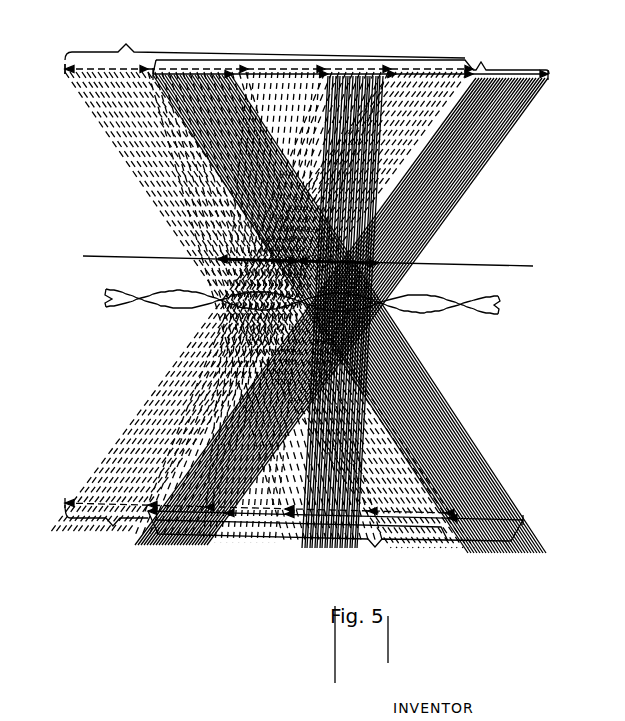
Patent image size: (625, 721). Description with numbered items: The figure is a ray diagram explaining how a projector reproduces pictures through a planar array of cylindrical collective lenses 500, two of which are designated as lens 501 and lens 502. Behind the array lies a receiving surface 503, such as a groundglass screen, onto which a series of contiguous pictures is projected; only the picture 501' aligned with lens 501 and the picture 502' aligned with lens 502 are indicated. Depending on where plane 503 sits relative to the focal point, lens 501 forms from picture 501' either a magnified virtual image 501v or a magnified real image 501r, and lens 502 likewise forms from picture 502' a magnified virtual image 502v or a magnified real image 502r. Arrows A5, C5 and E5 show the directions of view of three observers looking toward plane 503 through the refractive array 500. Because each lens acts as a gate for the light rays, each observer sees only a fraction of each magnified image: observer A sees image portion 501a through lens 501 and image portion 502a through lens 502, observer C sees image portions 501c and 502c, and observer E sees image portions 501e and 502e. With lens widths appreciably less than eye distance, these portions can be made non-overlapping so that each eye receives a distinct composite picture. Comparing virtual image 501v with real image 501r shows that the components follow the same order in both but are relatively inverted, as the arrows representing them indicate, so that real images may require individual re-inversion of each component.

The planar array of cylindrical collective lenses 500 is at (286, 314).
The cylindrical collective lens 501 is at (204, 314).
The cylindrical collective lens 502 is at (400, 316).
The receiving surface 503 is at (490, 258).
The picture 501' is at (208, 239).
The picture 502' is at (380, 245).
The magnified virtual image 501v is at (269, 284).
The image portion 501c is at (270, 61).
The image portion 501a is at (423, 61).
The image portion 501e is at (92, 63).
The magnified real image 501r is at (259, 525).
The magnified virtual image 502v is at (507, 60).
The image portion 502c is at (355, 66).
The image portion 502a is at (505, 72).
The image portion 502e is at (180, 70).
The magnified real image 502r is at (335, 539).
The arrow indicating direction of view of observer A A5 is at (85, 560).
The arrow indicating direction of view of observer C C5 is at (262, 580).
The arrow indicating direction of view of observer E E5 is at (473, 560).